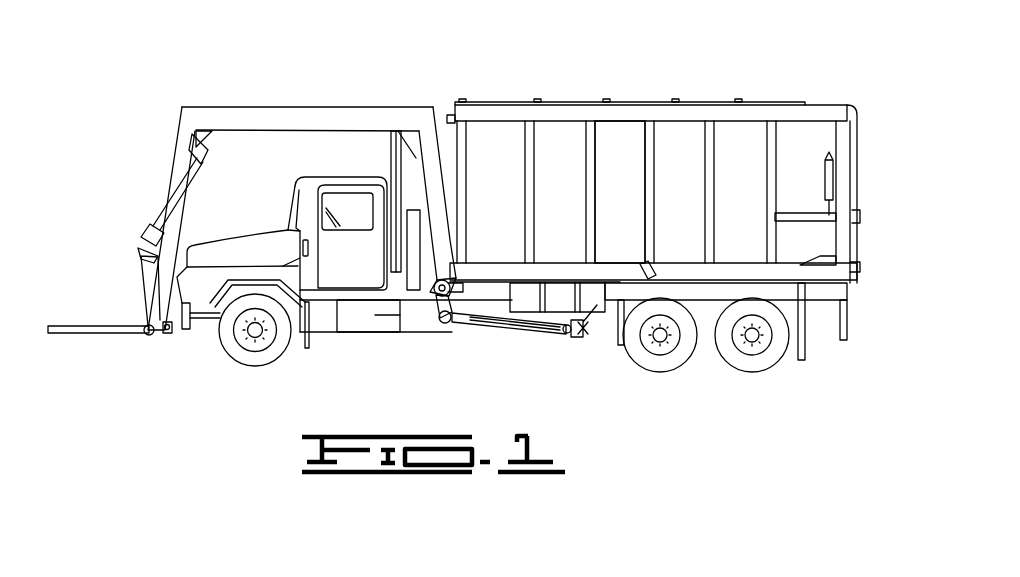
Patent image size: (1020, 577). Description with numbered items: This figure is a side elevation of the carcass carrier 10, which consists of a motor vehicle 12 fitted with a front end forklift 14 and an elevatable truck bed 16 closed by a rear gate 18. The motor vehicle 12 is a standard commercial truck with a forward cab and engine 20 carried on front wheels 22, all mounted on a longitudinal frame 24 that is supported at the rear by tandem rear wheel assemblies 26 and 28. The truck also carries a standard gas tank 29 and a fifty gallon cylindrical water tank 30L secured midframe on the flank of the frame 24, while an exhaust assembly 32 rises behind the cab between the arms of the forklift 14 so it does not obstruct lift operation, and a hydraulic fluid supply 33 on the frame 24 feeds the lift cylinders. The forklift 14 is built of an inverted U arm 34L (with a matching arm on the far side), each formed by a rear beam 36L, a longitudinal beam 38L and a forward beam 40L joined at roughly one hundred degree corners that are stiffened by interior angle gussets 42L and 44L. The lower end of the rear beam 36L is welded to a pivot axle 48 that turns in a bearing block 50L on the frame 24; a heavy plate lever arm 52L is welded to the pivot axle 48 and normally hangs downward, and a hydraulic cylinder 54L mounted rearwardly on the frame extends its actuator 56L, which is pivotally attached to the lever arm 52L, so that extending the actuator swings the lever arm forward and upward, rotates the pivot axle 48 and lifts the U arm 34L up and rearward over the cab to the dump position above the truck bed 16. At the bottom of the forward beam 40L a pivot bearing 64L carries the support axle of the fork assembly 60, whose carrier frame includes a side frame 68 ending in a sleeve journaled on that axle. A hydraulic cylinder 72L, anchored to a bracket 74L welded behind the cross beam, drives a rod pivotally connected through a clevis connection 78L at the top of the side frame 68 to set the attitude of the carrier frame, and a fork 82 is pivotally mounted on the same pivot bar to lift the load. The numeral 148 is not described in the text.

The carcass carrier 10 is at (596, 60).
The motor vehicle 12 is at (298, 378).
The front end forklift 14 is at (250, 120).
The elevatable truck bed 16 is at (692, 135).
The rear gate 18 is at (858, 170).
The forward cab and engine 20 is at (236, 237).
The front wheels 22 is at (232, 362).
The longitudinal frame 24 is at (422, 302).
The tandem rear wheel assembly 26 is at (672, 372).
The tandem rear wheel assembly 28 is at (766, 372).
The gas tank 29 is at (362, 335).
The cylindrical water tank 30L is at (622, 348).
The exhaust assembly 32 is at (391, 178).
The hydraulic fluid supply 33 is at (410, 292).
The inverted U arm 34L is at (350, 120).
The rear beam 36L is at (423, 138).
The longitudinal beam 38L is at (298, 120).
The forward beam 40L is at (176, 178).
The interior angle gusset 42L is at (425, 137).
The interior angle gusset 44L is at (183, 116).
The pivot axle 48 is at (449, 283).
The bearing block 50L is at (452, 322).
The lever arm 52L is at (430, 295).
The hydraulic cylinder 54L is at (540, 333).
The actuator 56L is at (449, 320).
The fork assembly 60 is at (126, 346).
The pivot bearing 64L is at (152, 336).
The side frame 68 is at (146, 281).
The hydraulic cylinder 72L is at (158, 230).
The bracket 74L is at (194, 152).
The clevis connection 78L is at (150, 252).
The fork 82 is at (78, 325).
The body panel 148 is at (640, 102).